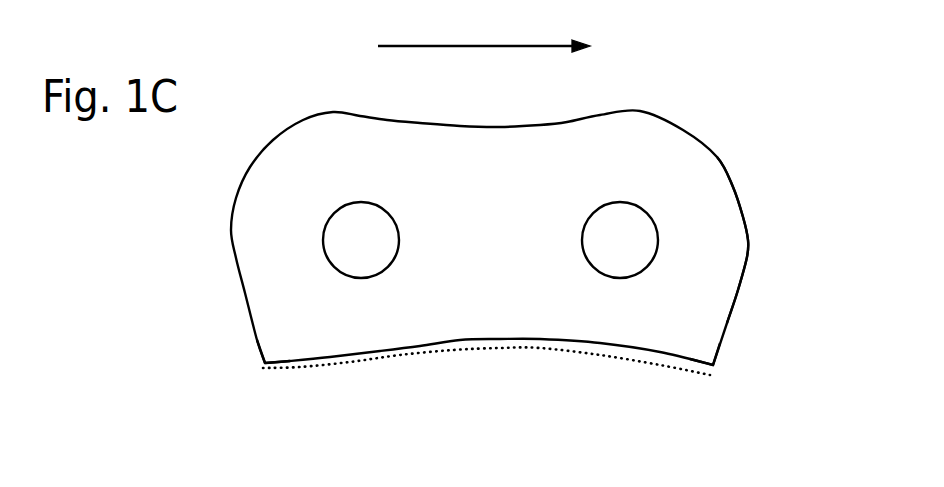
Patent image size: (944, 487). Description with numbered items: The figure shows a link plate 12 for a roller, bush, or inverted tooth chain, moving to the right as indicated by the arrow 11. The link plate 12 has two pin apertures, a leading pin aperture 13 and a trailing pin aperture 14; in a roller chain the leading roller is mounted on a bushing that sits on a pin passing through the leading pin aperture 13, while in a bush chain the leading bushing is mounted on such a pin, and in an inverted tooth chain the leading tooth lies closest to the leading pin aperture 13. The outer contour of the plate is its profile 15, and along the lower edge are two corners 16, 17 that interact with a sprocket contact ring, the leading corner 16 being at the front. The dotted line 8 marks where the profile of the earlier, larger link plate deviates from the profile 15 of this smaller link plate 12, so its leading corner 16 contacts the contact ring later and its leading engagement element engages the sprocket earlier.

The profile of the link plate of FIG. 1B 8 is at (430, 355).
The direction of movement 11 is at (484, 66).
The link plate 12 is at (748, 106).
The leading pin aperture 13 is at (620, 240).
The trailing pin aperture 14 is at (372, 243).
The profile 15 is at (748, 245).
The leading corner 16 is at (713, 365).
The corner 17 is at (265, 363).